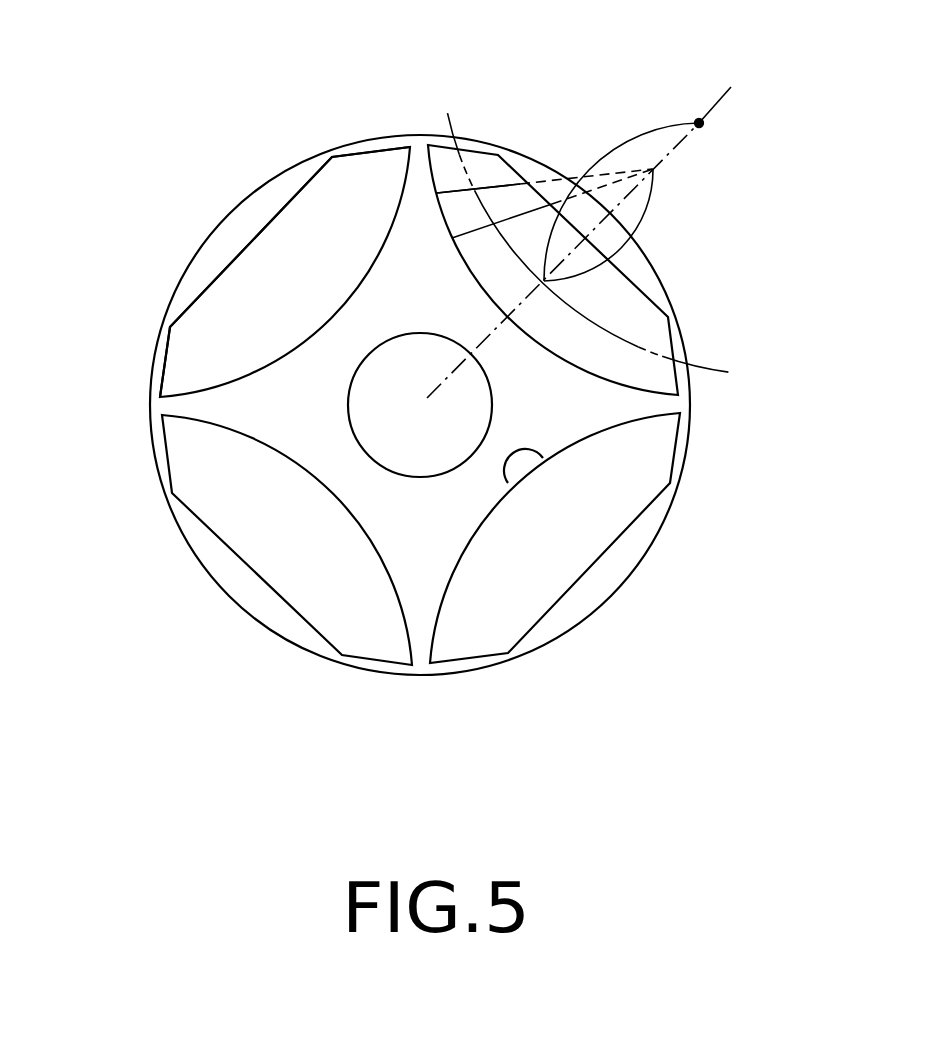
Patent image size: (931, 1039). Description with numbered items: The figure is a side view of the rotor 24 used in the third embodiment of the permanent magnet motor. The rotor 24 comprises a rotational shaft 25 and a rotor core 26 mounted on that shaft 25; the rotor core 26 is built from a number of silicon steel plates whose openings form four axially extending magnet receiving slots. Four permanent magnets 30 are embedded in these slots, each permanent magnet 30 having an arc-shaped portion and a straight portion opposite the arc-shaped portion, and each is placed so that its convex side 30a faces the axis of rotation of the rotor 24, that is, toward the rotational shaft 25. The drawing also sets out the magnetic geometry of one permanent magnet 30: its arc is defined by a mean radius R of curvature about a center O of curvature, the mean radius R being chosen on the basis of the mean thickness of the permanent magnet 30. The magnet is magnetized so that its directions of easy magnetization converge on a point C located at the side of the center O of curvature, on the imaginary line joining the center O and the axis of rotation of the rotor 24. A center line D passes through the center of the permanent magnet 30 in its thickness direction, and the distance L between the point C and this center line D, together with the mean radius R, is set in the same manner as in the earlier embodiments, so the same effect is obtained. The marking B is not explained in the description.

The rotor 24 is at (168, 283).
The rotational shaft 25 is at (349, 404).
The rotor core 26 is at (240, 227).
The permanent magnet 30 is at (655, 325).
The convex side 30a is at (508, 483).
The center of curvature O is at (703, 124).
The mean radius of curvature R is at (617, 136).
The point C is at (655, 170).
The distance L is at (642, 217).
The bridge width line B is at (453, 190).
The center line D is at (712, 373).